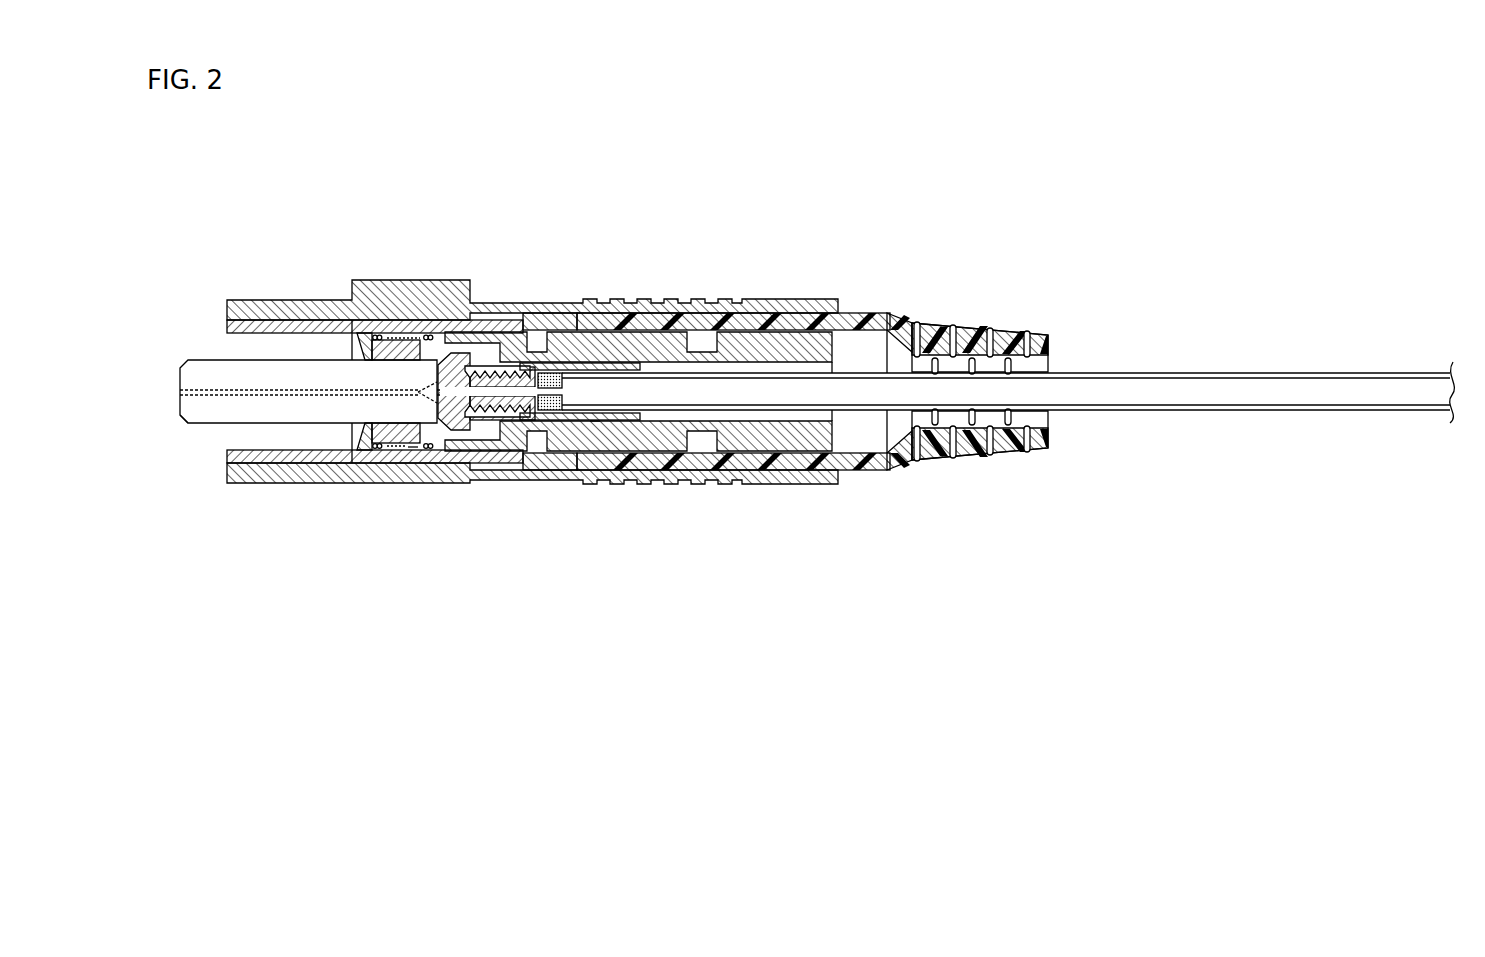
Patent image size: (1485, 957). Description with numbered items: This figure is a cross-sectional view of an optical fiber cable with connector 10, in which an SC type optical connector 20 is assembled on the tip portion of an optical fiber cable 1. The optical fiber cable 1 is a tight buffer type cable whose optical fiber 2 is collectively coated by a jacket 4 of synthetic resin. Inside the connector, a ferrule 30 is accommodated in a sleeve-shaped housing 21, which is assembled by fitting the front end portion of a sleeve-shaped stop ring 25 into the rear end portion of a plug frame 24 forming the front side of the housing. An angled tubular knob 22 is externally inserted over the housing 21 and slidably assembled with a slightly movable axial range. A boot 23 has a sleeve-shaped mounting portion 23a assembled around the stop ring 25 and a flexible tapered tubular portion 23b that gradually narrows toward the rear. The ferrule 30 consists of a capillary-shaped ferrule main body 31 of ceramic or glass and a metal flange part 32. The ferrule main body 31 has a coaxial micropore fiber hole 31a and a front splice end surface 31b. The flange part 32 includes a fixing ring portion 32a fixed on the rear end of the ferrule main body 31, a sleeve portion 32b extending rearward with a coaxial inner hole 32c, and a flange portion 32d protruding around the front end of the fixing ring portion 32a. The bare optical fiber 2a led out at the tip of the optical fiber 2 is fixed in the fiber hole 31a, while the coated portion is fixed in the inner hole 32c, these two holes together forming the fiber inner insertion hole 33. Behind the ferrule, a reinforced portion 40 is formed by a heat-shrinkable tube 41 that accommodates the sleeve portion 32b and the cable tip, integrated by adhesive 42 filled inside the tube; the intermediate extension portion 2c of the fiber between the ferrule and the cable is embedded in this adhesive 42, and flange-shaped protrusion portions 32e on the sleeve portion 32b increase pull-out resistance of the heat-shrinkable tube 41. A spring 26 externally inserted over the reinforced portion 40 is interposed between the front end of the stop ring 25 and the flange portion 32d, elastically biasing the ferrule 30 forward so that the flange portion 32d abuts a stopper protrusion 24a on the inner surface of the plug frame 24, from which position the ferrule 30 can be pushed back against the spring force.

The optical fiber cable 1 is at (999, 332).
The optical fiber 2 is at (999, 337).
The bare optical fiber 2a is at (323, 388).
The intermediate extension portion 2c is at (555, 373).
The jacket 4 is at (1288, 372).
The optical fiber cable with connector 10 is at (999, 316).
The optical connector 20 is at (942, 275).
The housing 21 is at (642, 188).
The knob 22 is at (368, 484).
The boot 23 is at (812, 445).
The mounting portion 23a is at (708, 465).
The tapered tubular portion 23b is at (975, 452).
The plug frame 24 is at (402, 323).
The stopper protrusion 24a is at (403, 340).
The stop ring 25 is at (612, 318).
The spring 26 is at (376, 343).
The ferrule 30 is at (413, 456).
The ferrule main body 31 is at (285, 389).
The fiber hole 31a is at (212, 388).
The splice end surface 31b is at (184, 416).
The flange part 32 is at (482, 395).
The fixing ring portion 32a is at (455, 345).
The sleeve portion 32b is at (490, 420).
The inner hole 32c is at (568, 410).
The flange portion 32d is at (400, 448).
The protrusion portion 32e is at (487, 368).
The fiber inner insertion hole 33 is at (302, 396).
The reinforced portion 40 is at (602, 426).
The heat-shrinkable tube 41 is at (627, 363).
The adhesive 42 is at (545, 421).